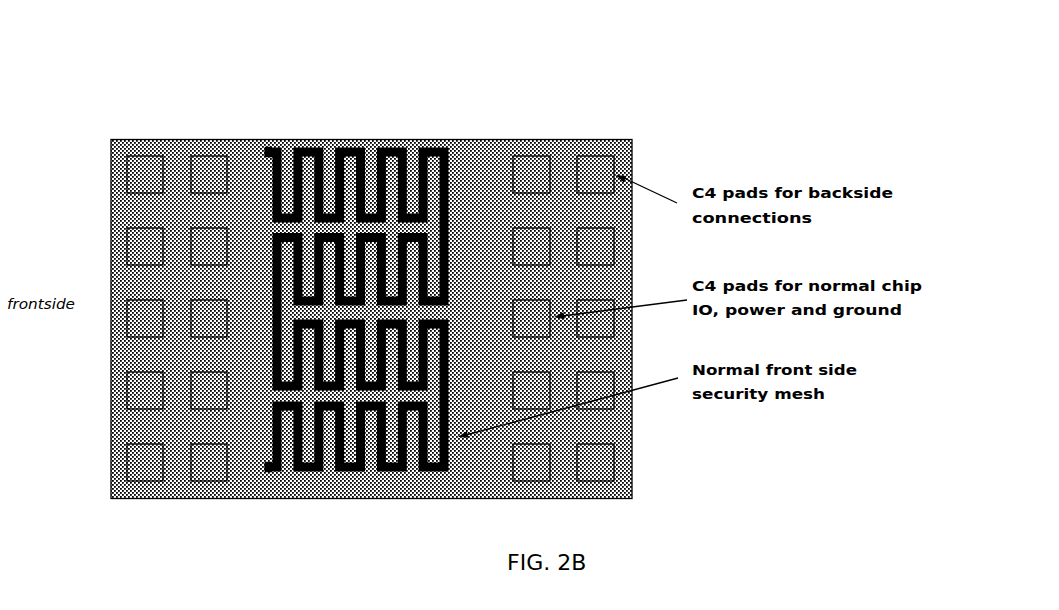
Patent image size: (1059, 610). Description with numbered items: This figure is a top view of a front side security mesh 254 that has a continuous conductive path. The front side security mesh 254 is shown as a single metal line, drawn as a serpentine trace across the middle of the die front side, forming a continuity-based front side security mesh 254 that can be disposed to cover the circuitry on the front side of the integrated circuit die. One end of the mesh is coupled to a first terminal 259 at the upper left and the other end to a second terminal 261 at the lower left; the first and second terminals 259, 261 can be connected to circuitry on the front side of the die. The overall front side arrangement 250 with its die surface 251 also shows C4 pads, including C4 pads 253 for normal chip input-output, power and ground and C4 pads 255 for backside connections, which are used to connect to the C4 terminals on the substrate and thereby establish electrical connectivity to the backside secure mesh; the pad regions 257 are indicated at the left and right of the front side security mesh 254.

The integrated circuit die with security mesh 250 is at (90, 60).
The die substrate / front side 251 is at (268, 140).
The C4 pads for normal chip IO, power and ground 253 is at (147, 250).
The front side security mesh 254 is at (397, 148).
The C4 pads for backside connections 255 is at (145, 168).
The pad regions 257 is at (195, 134).
The first terminal 259 is at (264, 150).
The second terminal 261 is at (267, 473).